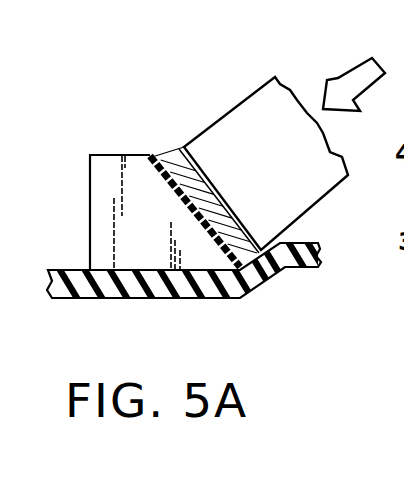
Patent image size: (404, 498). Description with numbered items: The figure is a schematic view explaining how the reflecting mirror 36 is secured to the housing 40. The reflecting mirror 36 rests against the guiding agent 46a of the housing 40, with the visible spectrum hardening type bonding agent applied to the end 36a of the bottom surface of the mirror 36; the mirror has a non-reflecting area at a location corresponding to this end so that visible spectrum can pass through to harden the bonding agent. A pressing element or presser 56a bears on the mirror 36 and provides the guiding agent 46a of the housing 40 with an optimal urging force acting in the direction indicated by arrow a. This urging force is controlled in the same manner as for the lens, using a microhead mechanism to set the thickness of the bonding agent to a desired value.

The reflecting mirror 36 is at (174, 152).
The end of the bottom surface of the reflecting mirror 36a is at (160, 162).
The housing 40 is at (143, 296).
The guiding agent 46a is at (102, 202).
The presser 56a is at (265, 93).
The arrow a is at (359, 75).